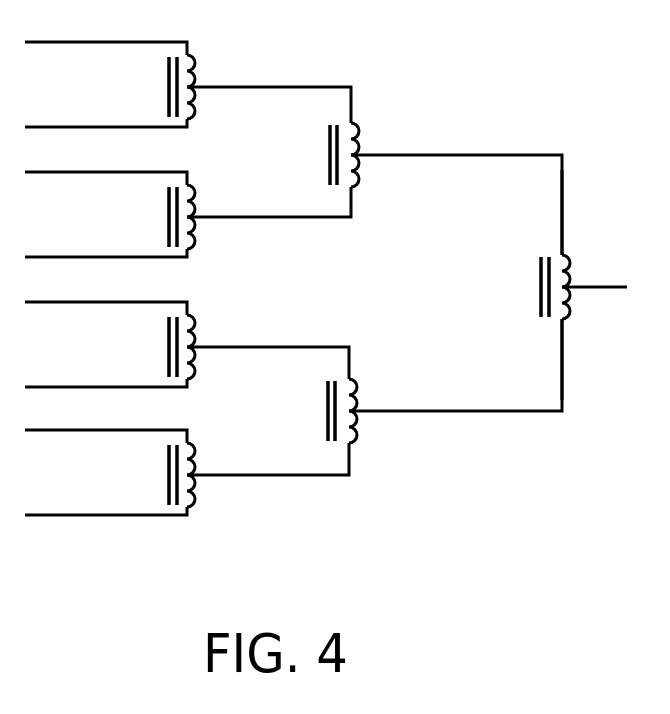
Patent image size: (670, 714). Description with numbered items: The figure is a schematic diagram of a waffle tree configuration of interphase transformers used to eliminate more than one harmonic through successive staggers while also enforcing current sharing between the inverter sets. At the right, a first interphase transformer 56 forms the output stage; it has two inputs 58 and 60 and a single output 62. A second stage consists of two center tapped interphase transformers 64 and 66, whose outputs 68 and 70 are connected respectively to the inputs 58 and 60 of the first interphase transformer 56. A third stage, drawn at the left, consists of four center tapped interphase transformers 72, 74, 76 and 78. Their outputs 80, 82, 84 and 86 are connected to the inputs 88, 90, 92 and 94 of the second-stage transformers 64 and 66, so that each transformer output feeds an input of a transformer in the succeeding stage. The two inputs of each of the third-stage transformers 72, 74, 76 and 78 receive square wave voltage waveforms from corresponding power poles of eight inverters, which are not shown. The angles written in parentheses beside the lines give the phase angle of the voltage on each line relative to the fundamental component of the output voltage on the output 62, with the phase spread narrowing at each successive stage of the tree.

The first interphase transformer 56 is at (558, 254).
The input 58 is at (562, 192).
The input 60 is at (562, 367).
The output 62 is at (614, 289).
The center tapped interphase transformer 64 is at (342, 122).
The center tapped interphase transformer 66 is at (340, 378).
The output 68 is at (399, 156).
The output 70 is at (392, 413).
The center tapped interphase transformer 72 is at (178, 56).
The center tapped interphase transformer 74 is at (178, 185).
The center tapped interphase transformer 76 is at (178, 316).
The center tapped interphase transformer 78 is at (178, 444).
The output 80 is at (210, 88).
The output 82 is at (208, 218).
The output 84 is at (216, 349).
The output 86 is at (204, 476).
The input 88 is at (324, 87).
The input 90 is at (320, 218).
The input 92 is at (323, 347).
The input 94 is at (318, 477).